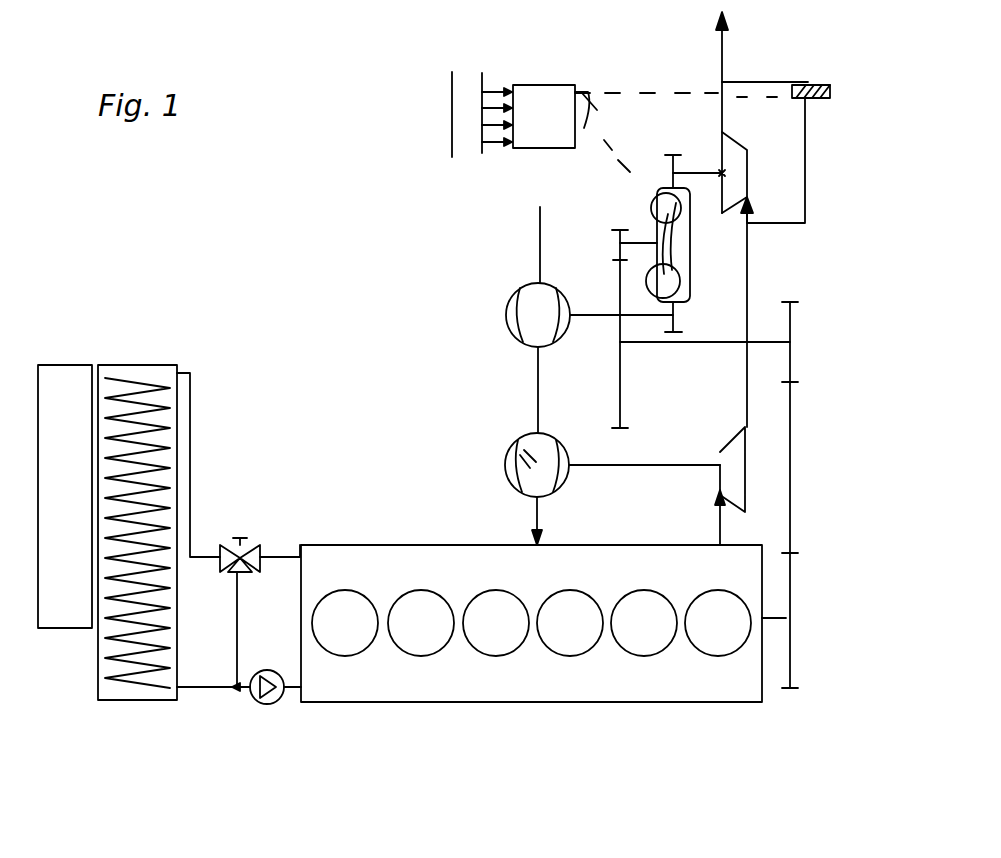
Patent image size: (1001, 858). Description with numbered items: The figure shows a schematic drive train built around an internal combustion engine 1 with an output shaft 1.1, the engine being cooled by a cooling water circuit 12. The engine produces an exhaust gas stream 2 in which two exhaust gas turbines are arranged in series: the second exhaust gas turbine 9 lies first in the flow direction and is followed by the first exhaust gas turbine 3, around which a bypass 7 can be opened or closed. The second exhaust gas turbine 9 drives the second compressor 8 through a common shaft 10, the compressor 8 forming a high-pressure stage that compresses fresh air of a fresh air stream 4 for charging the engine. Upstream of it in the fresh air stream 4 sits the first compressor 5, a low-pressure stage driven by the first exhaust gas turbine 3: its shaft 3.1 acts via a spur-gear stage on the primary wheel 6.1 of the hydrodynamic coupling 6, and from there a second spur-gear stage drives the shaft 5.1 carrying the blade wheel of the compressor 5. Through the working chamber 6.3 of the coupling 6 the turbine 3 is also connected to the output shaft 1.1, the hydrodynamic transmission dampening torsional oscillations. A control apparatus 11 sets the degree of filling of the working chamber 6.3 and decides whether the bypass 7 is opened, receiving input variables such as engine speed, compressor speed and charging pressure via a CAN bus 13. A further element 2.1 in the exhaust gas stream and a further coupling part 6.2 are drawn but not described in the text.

The internal combustion engine 1 is at (337, 687).
The output shaft 1.1 is at (770, 622).
The exhaust gas stream 2 is at (724, 76).
The exhaust gas sensor 2.1 is at (824, 84).
The first exhaust gas turbine 3 is at (738, 152).
The shaft 3.1 is at (696, 170).
The fresh air stream 4 is at (540, 242).
The first compressor 5 is at (505, 325).
The shaft of the compressor 5.1 is at (584, 313).
The hydrodynamic coupling 6 is at (648, 178).
The primary wheel 6.1 is at (683, 284).
The compressor 6.2 is at (646, 212).
The working chamber 6.3 is at (678, 268).
The bypass 7 is at (807, 142).
The second compressor 8 is at (505, 478).
The second exhaust gas turbine 9 is at (727, 447).
The common shaft 10 is at (600, 468).
The control apparatus 11 is at (541, 100).
The cooling water circuit 12 is at (155, 720).
The CAN bus 13 is at (467, 80).